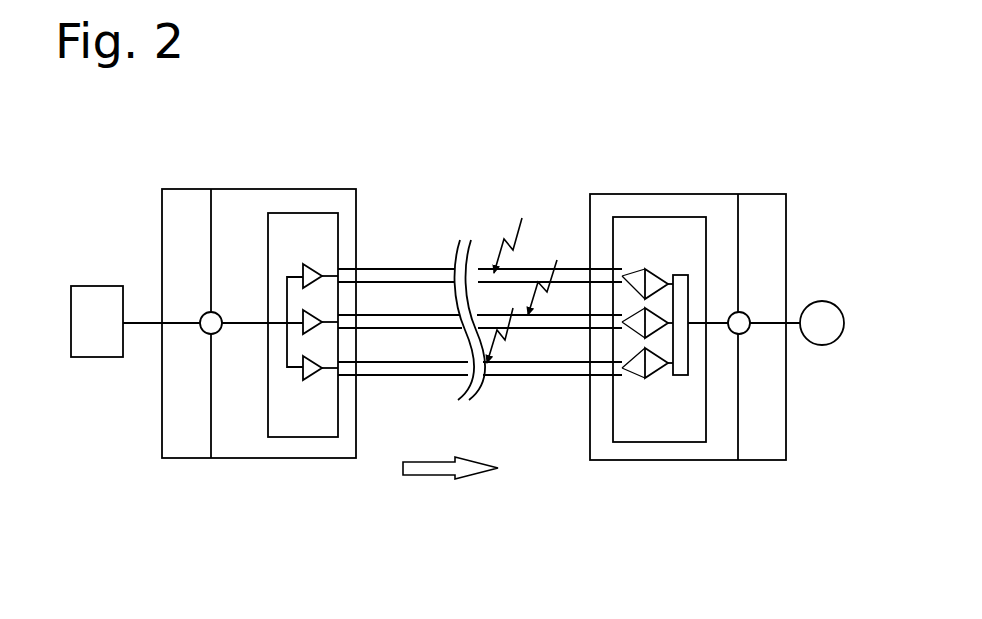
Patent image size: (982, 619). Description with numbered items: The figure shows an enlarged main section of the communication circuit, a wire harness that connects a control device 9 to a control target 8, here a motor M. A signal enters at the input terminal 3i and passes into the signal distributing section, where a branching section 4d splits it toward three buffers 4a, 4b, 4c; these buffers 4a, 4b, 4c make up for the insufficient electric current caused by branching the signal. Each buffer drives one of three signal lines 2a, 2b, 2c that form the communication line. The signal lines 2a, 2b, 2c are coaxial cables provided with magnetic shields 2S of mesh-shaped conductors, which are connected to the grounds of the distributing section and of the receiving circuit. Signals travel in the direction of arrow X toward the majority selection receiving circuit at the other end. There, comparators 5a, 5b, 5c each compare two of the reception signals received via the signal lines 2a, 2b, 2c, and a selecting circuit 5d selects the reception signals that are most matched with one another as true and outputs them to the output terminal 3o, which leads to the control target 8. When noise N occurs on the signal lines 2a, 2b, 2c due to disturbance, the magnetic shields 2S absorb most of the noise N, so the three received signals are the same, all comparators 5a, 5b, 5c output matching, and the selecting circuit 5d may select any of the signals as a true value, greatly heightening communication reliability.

The signal line 2a is at (397, 268).
The signal line 2b is at (403, 315).
The signal line 2c is at (411, 361).
The magnetic shield 2S is at (491, 267).
The input terminal 3i is at (207, 332).
The output terminal 3o is at (745, 312).
The buffer 4a is at (307, 265).
The buffer 4b is at (315, 317).
The buffer 4c is at (318, 362).
The branching section 4d is at (286, 320).
The comparator 5a is at (643, 284).
The comparator 5b is at (644, 333).
The comparator 5c is at (644, 366).
The selecting circuit 5d is at (680, 275).
The control target 8 is at (821, 300).
The control device 9 is at (92, 358).
The noise N is at (522, 282).
The arrow X is at (425, 475).